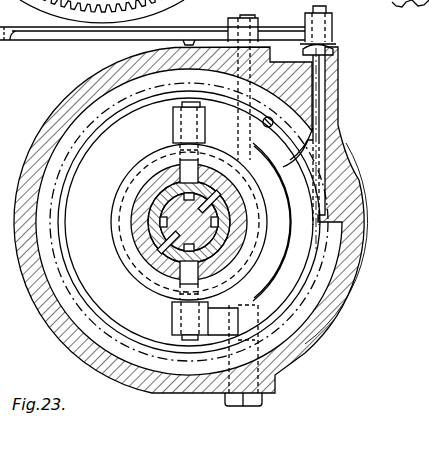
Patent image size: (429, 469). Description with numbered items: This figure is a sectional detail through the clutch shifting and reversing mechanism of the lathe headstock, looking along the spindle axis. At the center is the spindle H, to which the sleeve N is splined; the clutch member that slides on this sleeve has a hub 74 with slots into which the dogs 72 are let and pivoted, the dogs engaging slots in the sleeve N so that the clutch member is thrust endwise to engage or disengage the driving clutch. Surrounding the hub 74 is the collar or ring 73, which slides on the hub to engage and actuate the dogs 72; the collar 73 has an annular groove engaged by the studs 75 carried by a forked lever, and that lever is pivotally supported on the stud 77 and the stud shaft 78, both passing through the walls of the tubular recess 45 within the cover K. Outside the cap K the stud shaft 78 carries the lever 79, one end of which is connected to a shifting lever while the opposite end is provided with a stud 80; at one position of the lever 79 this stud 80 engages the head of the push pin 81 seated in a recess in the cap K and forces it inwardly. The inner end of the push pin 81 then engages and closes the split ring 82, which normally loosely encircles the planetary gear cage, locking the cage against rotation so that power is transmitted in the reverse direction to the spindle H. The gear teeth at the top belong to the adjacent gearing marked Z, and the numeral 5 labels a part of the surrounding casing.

The casing wall 5 is at (42, 192).
The tubular recess 45 is at (308, 313).
The dogs 72 is at (180, 170).
The collar or ring 73 is at (113, 197).
The hub 74 is at (172, 237).
The studs 75 is at (172, 128).
The stud 77 is at (248, 327).
The stud shaft 78 is at (303, 167).
The lever 79 is at (33, 43).
The stud 80 is at (334, 50).
The push pin 81 is at (320, 100).
The split ring 82 is at (338, 262).
The cover K is at (52, 121).
The sleeve N is at (148, 213).
The spindle H is at (174, 242).
The gear Z is at (224, 27).